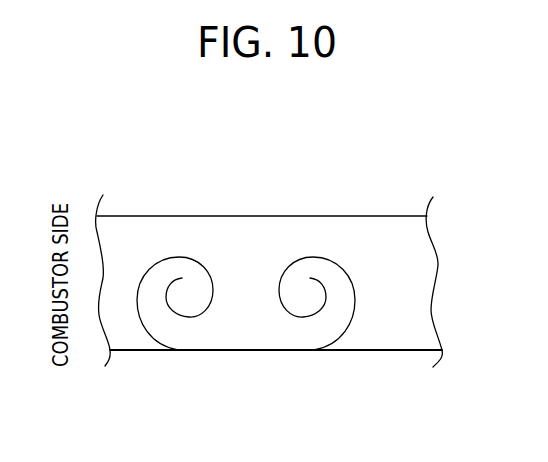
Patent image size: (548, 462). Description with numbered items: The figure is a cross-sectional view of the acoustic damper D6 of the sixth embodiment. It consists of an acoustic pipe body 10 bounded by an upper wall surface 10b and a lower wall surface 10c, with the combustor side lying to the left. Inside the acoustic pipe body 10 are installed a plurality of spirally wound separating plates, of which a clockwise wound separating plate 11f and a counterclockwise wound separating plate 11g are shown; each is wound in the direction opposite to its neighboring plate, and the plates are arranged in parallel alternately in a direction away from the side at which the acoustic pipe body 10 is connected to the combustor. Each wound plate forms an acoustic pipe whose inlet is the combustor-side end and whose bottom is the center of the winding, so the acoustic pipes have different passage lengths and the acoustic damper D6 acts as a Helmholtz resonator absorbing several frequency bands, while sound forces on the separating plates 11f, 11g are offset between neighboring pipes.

The acoustic pipe body 10 is at (248, 216).
The upper wall surface of the acoustic pipe body 10b is at (409, 216).
The lower wall surface 10c is at (405, 352).
The clockwise wound separating plate 11f is at (182, 257).
The counterclockwise wound separating plate 11g is at (318, 256).
The acoustic damper D6 is at (357, 169).